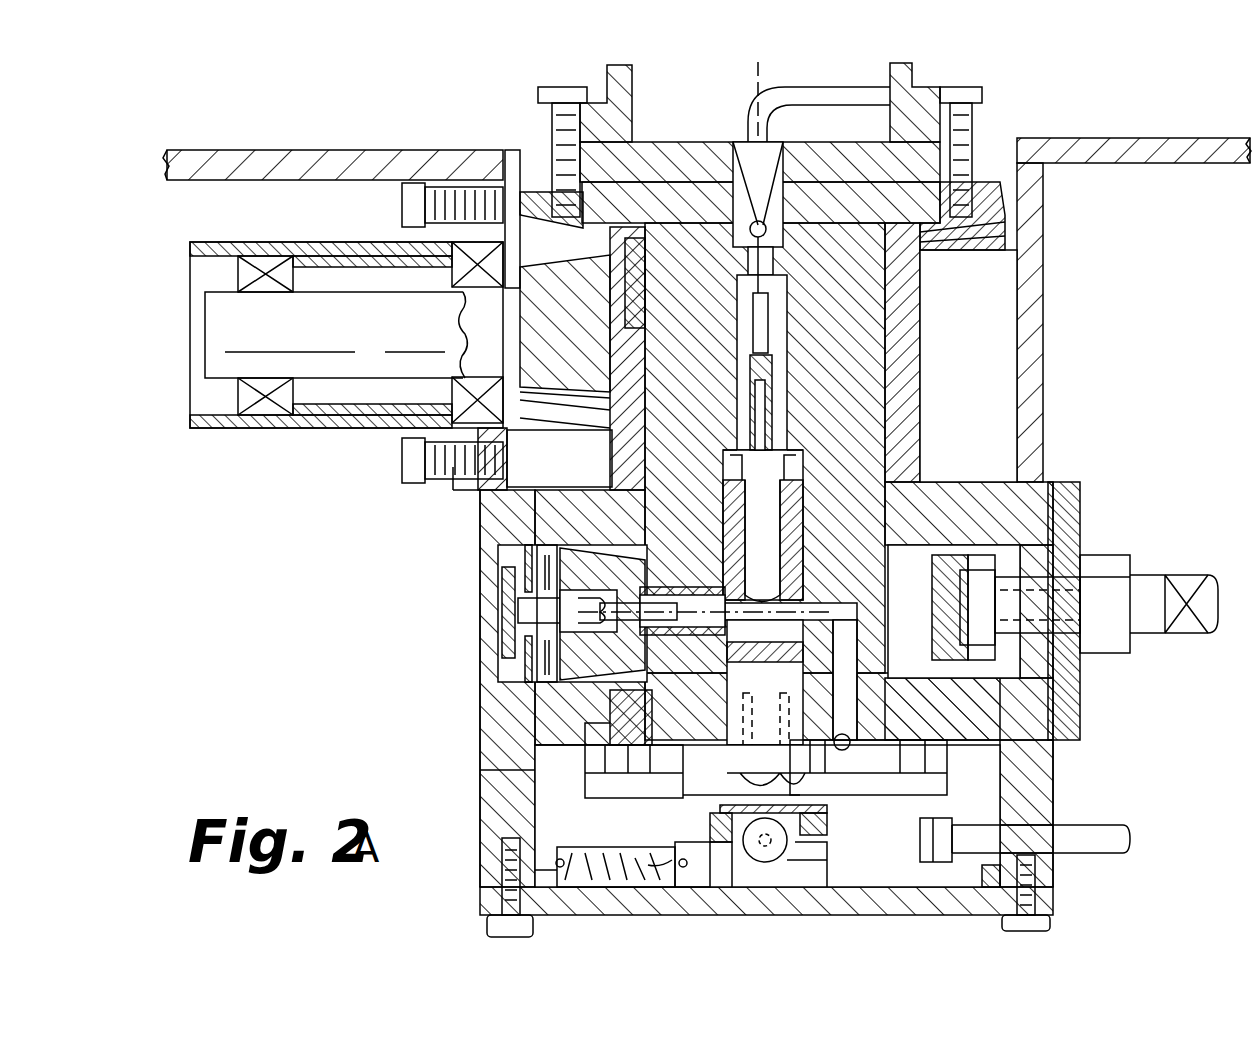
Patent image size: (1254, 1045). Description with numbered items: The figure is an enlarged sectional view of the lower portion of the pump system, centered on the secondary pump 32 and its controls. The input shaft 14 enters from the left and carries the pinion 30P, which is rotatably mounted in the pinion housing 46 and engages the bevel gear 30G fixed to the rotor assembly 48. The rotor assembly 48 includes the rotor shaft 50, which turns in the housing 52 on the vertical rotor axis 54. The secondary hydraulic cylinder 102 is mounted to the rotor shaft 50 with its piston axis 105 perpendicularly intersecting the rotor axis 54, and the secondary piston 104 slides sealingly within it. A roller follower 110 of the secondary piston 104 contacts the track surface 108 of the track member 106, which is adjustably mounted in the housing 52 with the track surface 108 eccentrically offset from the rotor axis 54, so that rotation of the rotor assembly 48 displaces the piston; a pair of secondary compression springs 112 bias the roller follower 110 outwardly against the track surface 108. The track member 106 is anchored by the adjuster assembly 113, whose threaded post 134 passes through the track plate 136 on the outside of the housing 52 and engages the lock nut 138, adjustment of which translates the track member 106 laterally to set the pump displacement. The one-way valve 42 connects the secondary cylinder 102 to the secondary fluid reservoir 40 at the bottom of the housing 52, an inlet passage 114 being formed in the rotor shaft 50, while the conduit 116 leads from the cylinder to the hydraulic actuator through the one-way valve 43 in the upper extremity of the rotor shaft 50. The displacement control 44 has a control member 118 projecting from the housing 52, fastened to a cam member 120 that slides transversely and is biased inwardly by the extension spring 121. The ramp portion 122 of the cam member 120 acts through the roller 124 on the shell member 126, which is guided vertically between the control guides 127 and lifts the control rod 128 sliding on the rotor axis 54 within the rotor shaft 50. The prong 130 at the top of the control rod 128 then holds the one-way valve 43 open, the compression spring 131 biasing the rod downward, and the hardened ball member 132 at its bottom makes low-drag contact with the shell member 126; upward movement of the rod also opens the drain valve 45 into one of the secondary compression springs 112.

The input shaft 14 is at (215, 333).
The pinion housing 46 is at (240, 430).
The pinion 30P is at (585, 428).
The bevel gear 30G is at (1001, 245).
The rotor assembly 48 is at (920, 382).
The housing 52 is at (1043, 392).
The rotor axis 54 is at (757, 80).
The conduit 116 is at (750, 113).
The one-way valve 43 is at (786, 142).
The prong 130 is at (752, 262).
The compression spring 131 is at (748, 316).
The rotor shaft 50 is at (851, 377).
The control rod 128 is at (708, 462).
The secondary compression springs 112 is at (660, 592).
The secondary piston 104 is at (628, 560).
The drain valve 45 is at (757, 553).
The inlet passage 114 is at (888, 582).
The track member 106 is at (960, 553).
The track surface 108 is at (932, 631).
The roller follower 110 is at (556, 621).
The track plate 136 is at (1077, 483).
The adjuster assembly 113 is at (1128, 538).
The threaded post 134 is at (1188, 575).
The lock nut 138 is at (1112, 655).
The secondary pump 32 is at (460, 706).
The piston axis 105 is at (765, 712).
The secondary hydraulic cylinder 102 is at (515, 776).
The secondary fluid reservoir 40 is at (575, 822).
The extension spring 121 is at (622, 863).
The hardened ball member 132 is at (747, 793).
The control guides 127 is at (712, 823).
The shell member 126 is at (820, 811).
The one-way valve 42 is at (840, 752).
The displacement control 44 is at (1077, 812).
The control member 118 is at (1110, 853).
The ramp portion 122 is at (752, 850).
The roller 124 is at (763, 862).
The cam member 120 is at (866, 880).